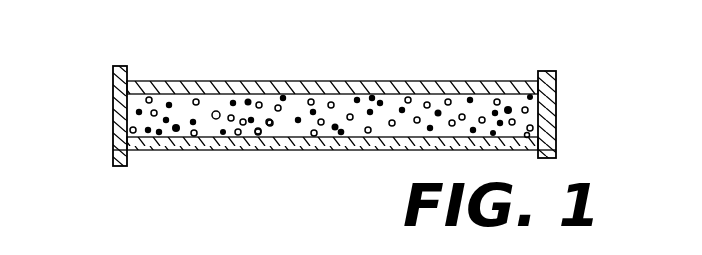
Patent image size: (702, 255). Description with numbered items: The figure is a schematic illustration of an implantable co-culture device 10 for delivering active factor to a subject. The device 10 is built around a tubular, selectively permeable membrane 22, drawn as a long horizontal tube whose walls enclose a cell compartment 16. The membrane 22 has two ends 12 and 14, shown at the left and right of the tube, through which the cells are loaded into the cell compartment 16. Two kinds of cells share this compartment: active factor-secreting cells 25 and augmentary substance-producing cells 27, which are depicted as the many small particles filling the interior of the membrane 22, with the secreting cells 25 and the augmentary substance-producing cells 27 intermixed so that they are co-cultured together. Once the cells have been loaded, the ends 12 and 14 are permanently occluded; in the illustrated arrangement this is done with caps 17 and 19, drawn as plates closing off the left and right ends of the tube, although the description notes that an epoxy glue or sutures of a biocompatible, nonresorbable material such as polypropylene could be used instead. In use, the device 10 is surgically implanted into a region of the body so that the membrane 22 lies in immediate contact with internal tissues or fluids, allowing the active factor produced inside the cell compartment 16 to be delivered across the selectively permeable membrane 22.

The implantable co-culture device 10 is at (202, 44).
The first end of membrane 12 is at (108, 102).
The second end of membrane 14 is at (568, 89).
The cell compartment 16 is at (379, 101).
The cap 17 is at (113, 150).
The cap 19 is at (556, 141).
The selectively permeable membrane 22 is at (290, 80).
The active factor-secreting cells 25 is at (270, 126).
The augmentary substance-producing cells 27 is at (342, 137).